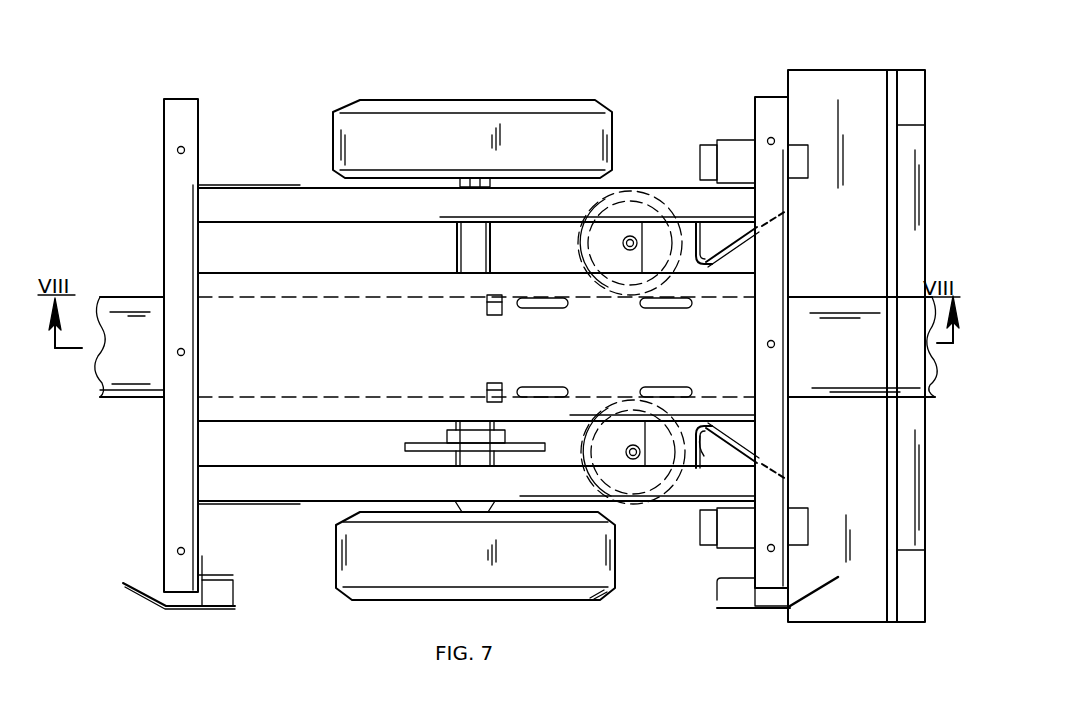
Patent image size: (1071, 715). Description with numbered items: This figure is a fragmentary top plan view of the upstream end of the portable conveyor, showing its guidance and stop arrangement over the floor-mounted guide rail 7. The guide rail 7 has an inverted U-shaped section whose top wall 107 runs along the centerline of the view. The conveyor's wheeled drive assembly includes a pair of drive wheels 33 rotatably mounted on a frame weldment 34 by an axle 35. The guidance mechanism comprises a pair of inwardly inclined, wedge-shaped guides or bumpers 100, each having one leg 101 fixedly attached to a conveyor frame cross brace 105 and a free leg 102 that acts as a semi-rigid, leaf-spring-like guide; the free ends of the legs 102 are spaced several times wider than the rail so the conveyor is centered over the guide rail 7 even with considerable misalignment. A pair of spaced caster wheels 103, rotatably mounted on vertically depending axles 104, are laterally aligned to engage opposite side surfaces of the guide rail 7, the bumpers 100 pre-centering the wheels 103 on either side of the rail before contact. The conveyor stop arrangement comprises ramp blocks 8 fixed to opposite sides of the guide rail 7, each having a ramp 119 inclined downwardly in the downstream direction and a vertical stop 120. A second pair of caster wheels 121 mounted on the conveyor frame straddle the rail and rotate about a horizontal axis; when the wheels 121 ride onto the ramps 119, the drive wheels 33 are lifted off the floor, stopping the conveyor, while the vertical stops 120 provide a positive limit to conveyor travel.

The guide rail 7 is at (856, 303).
The ramp blocks 8 is at (828, 70).
The drive wheels 33 is at (537, 103).
The frame weldment 34 is at (274, 198).
The axle 35 is at (460, 250).
The wedge-shaped guides 100 is at (712, 276).
The leg 101 is at (703, 448).
The free leg 102 is at (740, 250).
The caster wheels 103 is at (580, 247).
The axles 104 is at (633, 462).
The cross brace 105 is at (683, 234).
The top wall 107 is at (132, 386).
The ramp 119 is at (793, 80).
The vertical stop 120 is at (912, 80).
The caster wheels 121 is at (702, 158).